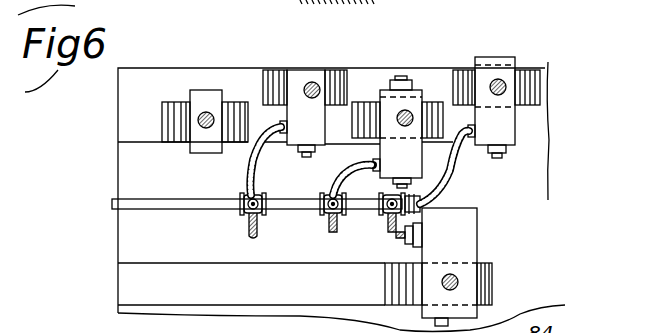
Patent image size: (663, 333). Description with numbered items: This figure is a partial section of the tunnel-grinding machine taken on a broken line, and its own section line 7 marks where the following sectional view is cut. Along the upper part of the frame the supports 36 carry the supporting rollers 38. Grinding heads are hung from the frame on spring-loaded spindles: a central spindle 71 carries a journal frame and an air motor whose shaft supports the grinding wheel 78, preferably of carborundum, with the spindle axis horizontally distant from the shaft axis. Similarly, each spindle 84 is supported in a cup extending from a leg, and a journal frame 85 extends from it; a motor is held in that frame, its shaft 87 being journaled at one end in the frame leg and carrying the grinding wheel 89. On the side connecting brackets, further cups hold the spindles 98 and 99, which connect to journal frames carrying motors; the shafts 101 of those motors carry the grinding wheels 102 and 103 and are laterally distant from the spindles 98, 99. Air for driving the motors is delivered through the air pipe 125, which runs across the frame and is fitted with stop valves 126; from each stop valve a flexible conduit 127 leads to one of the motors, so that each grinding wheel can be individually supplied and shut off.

The section line 7 7 is at (105, 120).
The support 36 is at (195, 153).
The supporting roller 38 is at (162, 110).
The spindle 71 is at (453, 277).
The grinding wheel 78 is at (493, 284).
The spindle 84 is at (490, 85).
The journal frame 85 is at (516, 60).
The shaft 87 is at (500, 157).
The grinding wheel 89 is at (540, 82).
The spindle 98 is at (312, 82).
The spindle 99 is at (404, 126).
The shaft 101 is at (304, 160).
The grinding wheel 102 is at (263, 75).
The grinding wheel 103 is at (352, 110).
The air pipe 125 is at (165, 209).
The stop valve 126 is at (268, 213).
The flexible conduit 127 is at (250, 175).